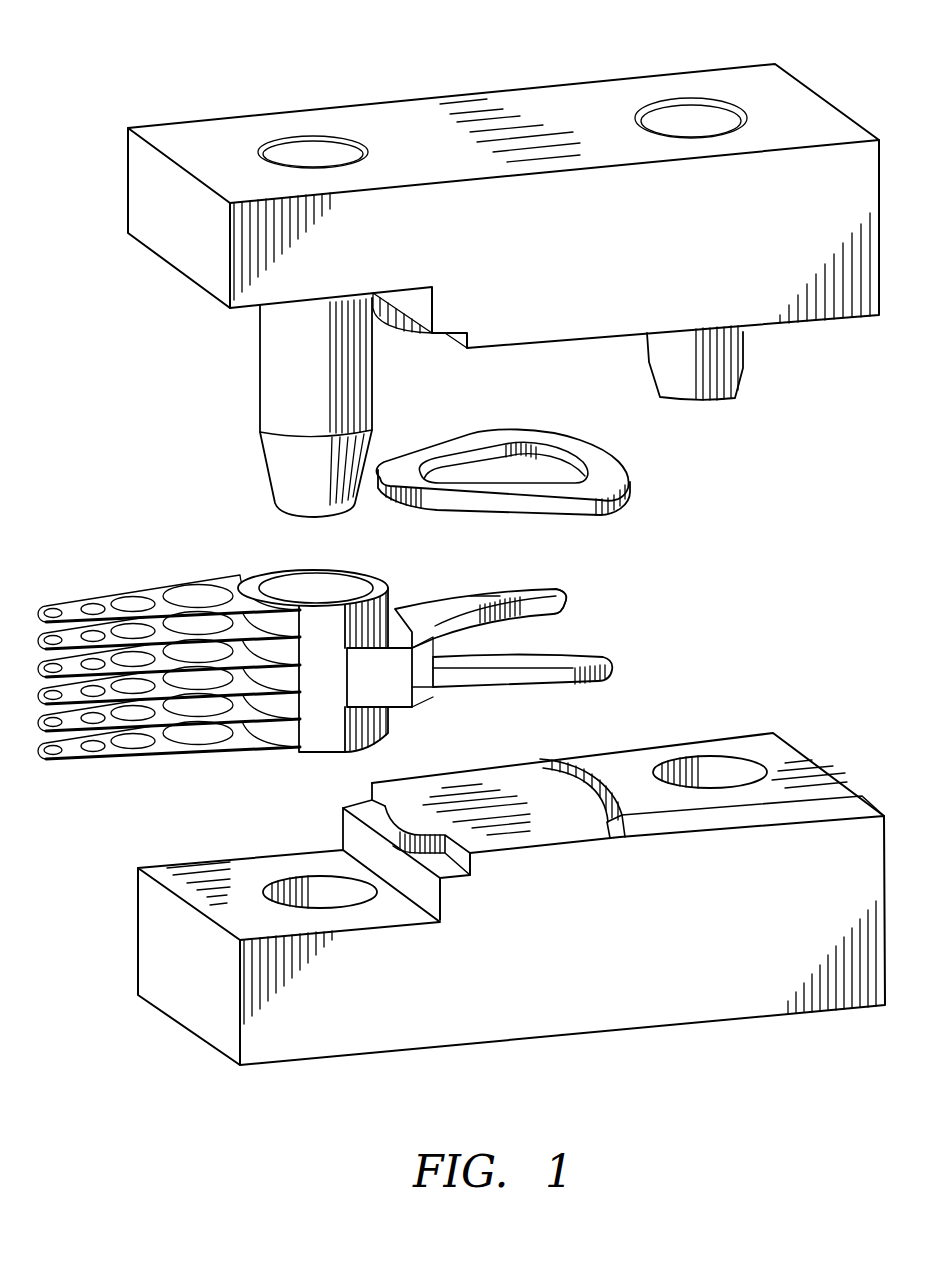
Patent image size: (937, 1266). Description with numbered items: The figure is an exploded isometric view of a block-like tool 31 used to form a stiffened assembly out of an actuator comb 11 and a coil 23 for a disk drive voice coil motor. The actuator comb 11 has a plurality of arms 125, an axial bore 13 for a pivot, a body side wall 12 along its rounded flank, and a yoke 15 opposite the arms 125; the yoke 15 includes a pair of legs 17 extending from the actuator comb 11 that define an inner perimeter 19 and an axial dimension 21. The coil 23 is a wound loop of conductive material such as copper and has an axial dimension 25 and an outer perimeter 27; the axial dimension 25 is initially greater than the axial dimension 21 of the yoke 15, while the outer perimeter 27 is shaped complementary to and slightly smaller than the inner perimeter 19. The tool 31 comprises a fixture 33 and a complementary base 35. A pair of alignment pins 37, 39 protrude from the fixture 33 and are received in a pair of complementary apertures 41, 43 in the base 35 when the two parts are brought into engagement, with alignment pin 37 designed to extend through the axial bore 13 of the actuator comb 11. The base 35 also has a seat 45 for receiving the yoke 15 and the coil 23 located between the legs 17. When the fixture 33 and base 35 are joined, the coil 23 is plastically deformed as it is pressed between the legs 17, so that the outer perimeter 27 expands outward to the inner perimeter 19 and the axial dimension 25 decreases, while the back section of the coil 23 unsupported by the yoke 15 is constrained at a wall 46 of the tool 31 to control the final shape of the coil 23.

The block-like tool 31 is at (152, 42).
The fixture 33 is at (574, 234).
The base 35 is at (511, 865).
The alignment pin 37 is at (258, 392).
The alignment pin 39 is at (742, 372).
The aperture 41 is at (302, 886).
The aperture 43 is at (723, 767).
The seat 45 is at (553, 803).
The wall 46 is at (588, 757).
The coil 23 is at (533, 494).
The axial dimension 25 is at (605, 467).
The outer perimeter 27 is at (632, 477).
The actuator comb 11 is at (213, 675).
The body side wall 12 is at (337, 733).
The axial bore 13 is at (300, 580).
The arms 125 is at (97, 753).
The yoke 15 is at (485, 630).
The legs 17 is at (462, 597).
The inner perimeter 19 is at (548, 603).
The axial dimension 21 is at (485, 626).